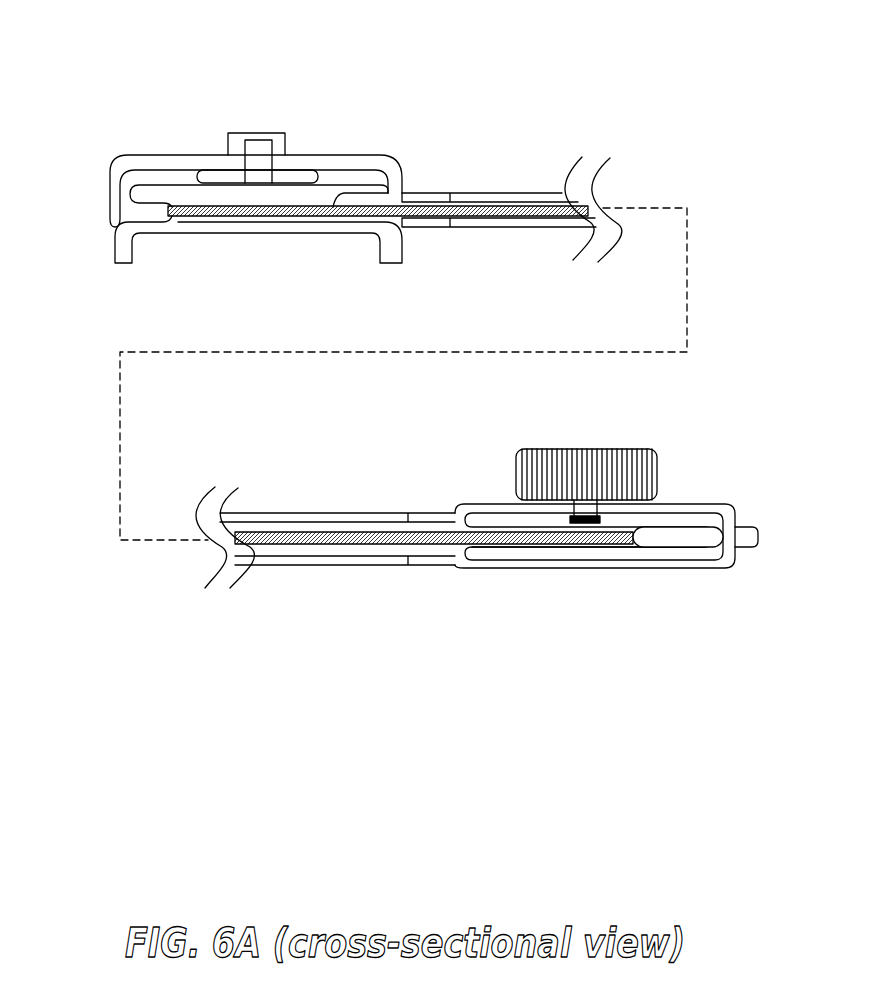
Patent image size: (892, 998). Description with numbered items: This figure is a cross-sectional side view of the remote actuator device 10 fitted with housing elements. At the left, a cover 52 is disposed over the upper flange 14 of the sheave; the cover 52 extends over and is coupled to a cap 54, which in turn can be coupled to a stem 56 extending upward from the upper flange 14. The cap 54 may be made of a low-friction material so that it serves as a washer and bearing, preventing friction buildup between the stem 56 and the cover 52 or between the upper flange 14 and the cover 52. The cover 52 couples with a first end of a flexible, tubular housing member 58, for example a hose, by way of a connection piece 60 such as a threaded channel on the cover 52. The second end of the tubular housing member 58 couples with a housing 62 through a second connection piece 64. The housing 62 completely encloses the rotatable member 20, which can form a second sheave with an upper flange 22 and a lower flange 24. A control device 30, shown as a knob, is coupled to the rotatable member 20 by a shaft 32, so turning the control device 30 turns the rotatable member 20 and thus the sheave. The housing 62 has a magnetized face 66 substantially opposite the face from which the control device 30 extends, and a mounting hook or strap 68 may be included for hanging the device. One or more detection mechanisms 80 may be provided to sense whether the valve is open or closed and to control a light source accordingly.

The remote actuator device 10 is at (163, 62).
The upper flange 14 is at (140, 196).
The rotatable member 20 is at (713, 537).
The upper flange 22 is at (502, 516).
The lower flange 24 is at (580, 560).
The control device 30 is at (555, 450).
The shaft 32 is at (593, 523).
The cover 52 is at (145, 162).
The cap 54 is at (218, 180).
The stem 56 is at (259, 148).
The tubular housing member 58 is at (482, 192).
The connection piece 60 is at (420, 227).
The housing 62 is at (655, 570).
The second connection piece 64 is at (422, 567).
The magnetized face 66 is at (695, 578).
The mounting hook or strap 68 is at (762, 530).
The detection mechanisms 80 is at (600, 523).